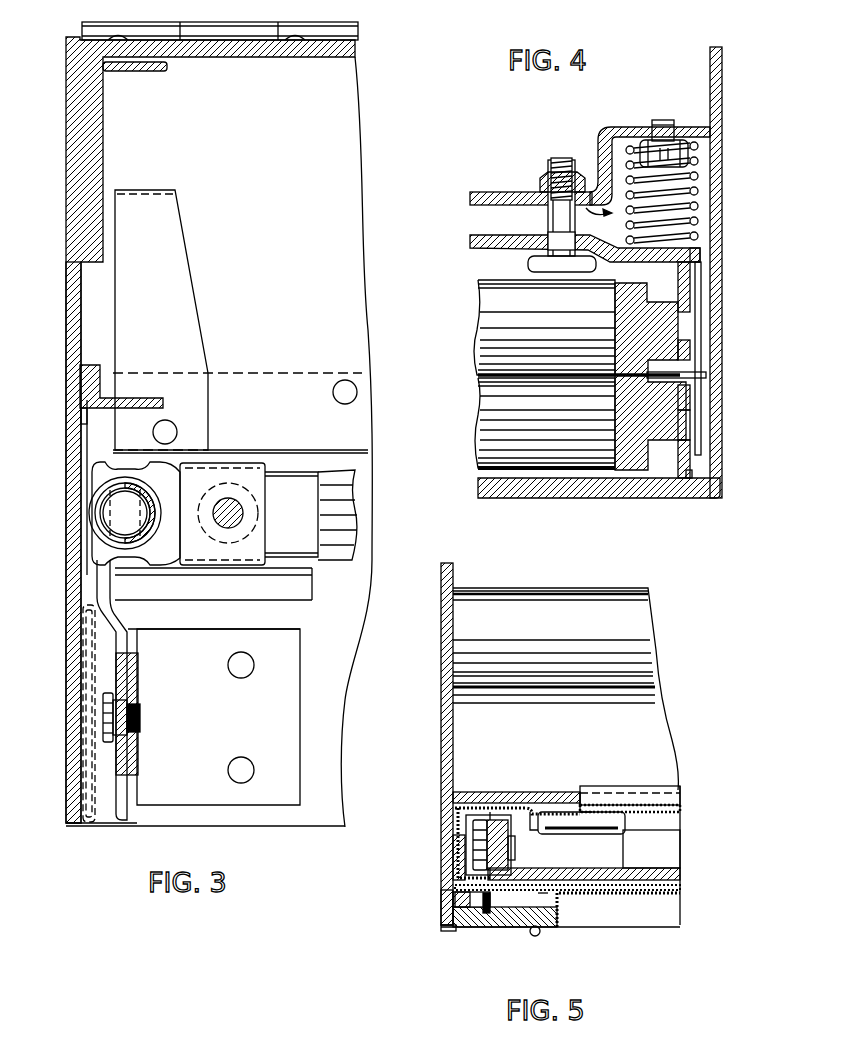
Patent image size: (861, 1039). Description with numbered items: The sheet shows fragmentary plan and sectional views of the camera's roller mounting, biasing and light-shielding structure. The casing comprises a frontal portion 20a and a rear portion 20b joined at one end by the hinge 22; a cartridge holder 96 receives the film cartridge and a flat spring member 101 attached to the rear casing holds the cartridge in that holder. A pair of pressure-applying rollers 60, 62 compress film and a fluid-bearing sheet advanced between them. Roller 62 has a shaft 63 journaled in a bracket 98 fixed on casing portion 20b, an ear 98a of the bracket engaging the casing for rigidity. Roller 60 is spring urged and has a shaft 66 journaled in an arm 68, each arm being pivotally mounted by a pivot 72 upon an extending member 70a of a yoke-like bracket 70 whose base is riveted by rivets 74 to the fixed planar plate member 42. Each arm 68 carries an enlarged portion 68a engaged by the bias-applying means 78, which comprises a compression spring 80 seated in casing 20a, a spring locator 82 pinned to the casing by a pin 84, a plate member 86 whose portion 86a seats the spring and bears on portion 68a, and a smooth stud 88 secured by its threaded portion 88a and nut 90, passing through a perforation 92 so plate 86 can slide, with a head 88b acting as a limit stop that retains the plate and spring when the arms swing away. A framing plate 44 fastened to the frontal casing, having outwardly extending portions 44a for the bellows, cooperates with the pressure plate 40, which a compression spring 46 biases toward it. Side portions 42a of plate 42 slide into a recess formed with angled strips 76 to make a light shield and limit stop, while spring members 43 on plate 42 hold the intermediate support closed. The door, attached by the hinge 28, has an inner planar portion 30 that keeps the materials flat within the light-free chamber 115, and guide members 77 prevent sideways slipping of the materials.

In FIG. 3, the hinge 22 is at (347, 24).
In FIG. 3, the cartridge holder 96 is at (103, 119).
In FIG. 3, the flat spring member 101 is at (180, 258).
In FIG. 3, the bracket 98 is at (100, 428).
In FIG. 4, the bracket 98 is at (688, 397).
In FIG. 3, the compression spring 80 is at (110, 497).
In FIG. 4, the compression spring 80 is at (700, 195).
In FIG. 3, the shaft 66 is at (78, 520).
In FIG. 4, the shaft 66 is at (683, 322).
In FIG. 3, the plate member 86 is at (305, 478).
In FIG. 4, the plate member 86 is at (478, 240).
In FIG. 3, the stud 88 is at (244, 514).
In FIG. 4, the stud 88 is at (548, 195).
In FIG. 3, the roller 60 is at (345, 503).
In FIG. 4, the roller 60 is at (548, 334).
In FIG. 3, the bias-applying means 78 is at (176, 580).
In FIG. 4, the bias-applying means 78 is at (597, 188).
In FIG. 3, the arm 68 is at (116, 617).
In FIG. 5, the arm 68 is at (492, 818).
In FIG. 3, the yoke-like bracket 70 is at (269, 722).
In FIG. 5, the yoke-like bracket 70 is at (665, 870).
In FIG. 3, the extending member 70a is at (140, 762).
In FIG. 5, the extending member 70a is at (510, 830).
In FIG. 3, the pivot 72 is at (105, 712).
In FIG. 5, the pivot 72 is at (500, 851).
In FIG. 4, the frontal casing portion 20a is at (722, 133).
In FIG. 5, the frontal casing portion 20a is at (455, 565).
In FIG. 4, the rear casing portion 20b is at (712, 378).
In FIG. 5, the rear casing portion 20b is at (452, 898).
In FIG. 4, the spring locator 82 is at (648, 142).
In FIG. 4, the pin 84 is at (664, 120).
In FIG. 4, the threaded portion 88a is at (574, 136).
In FIG. 4, the nut 90 is at (545, 176).
In FIG. 4, the perforation 92 is at (555, 234).
In FIG. 4, the head 88b is at (548, 266).
In FIG. 4, the portion of plate member 86a is at (700, 252).
In FIG. 4, the enlarged portion 68a is at (690, 268).
In FIG. 4, the roller 62 is at (548, 436).
In FIG. 4, the shaft 63 is at (688, 427).
In FIG. 4, the ear 98a is at (690, 480).
In FIG. 5, the framing plate 44 is at (518, 790).
In FIG. 5, the outwardly extending portion 44a is at (668, 801).
In FIG. 5, the pressure plate 40 is at (640, 790).
In FIG. 5, the compression spring 46 is at (588, 793).
In FIG. 5, the angled strip 76 is at (470, 808).
In FIG. 5, the rivet 74 is at (612, 865).
In FIG. 5, the inner planar portion 30 is at (660, 901).
In FIG. 5, the hinge 28 is at (541, 935).
In FIG. 5, the planar plate member 42 is at (615, 882).
In FIG. 5, the side portion 42a is at (453, 848).
In FIG. 5, the spring member 43 is at (470, 906).
In FIG. 5, the guide member 77 is at (497, 908).
In FIG. 5, the chamber 115 is at (543, 893).